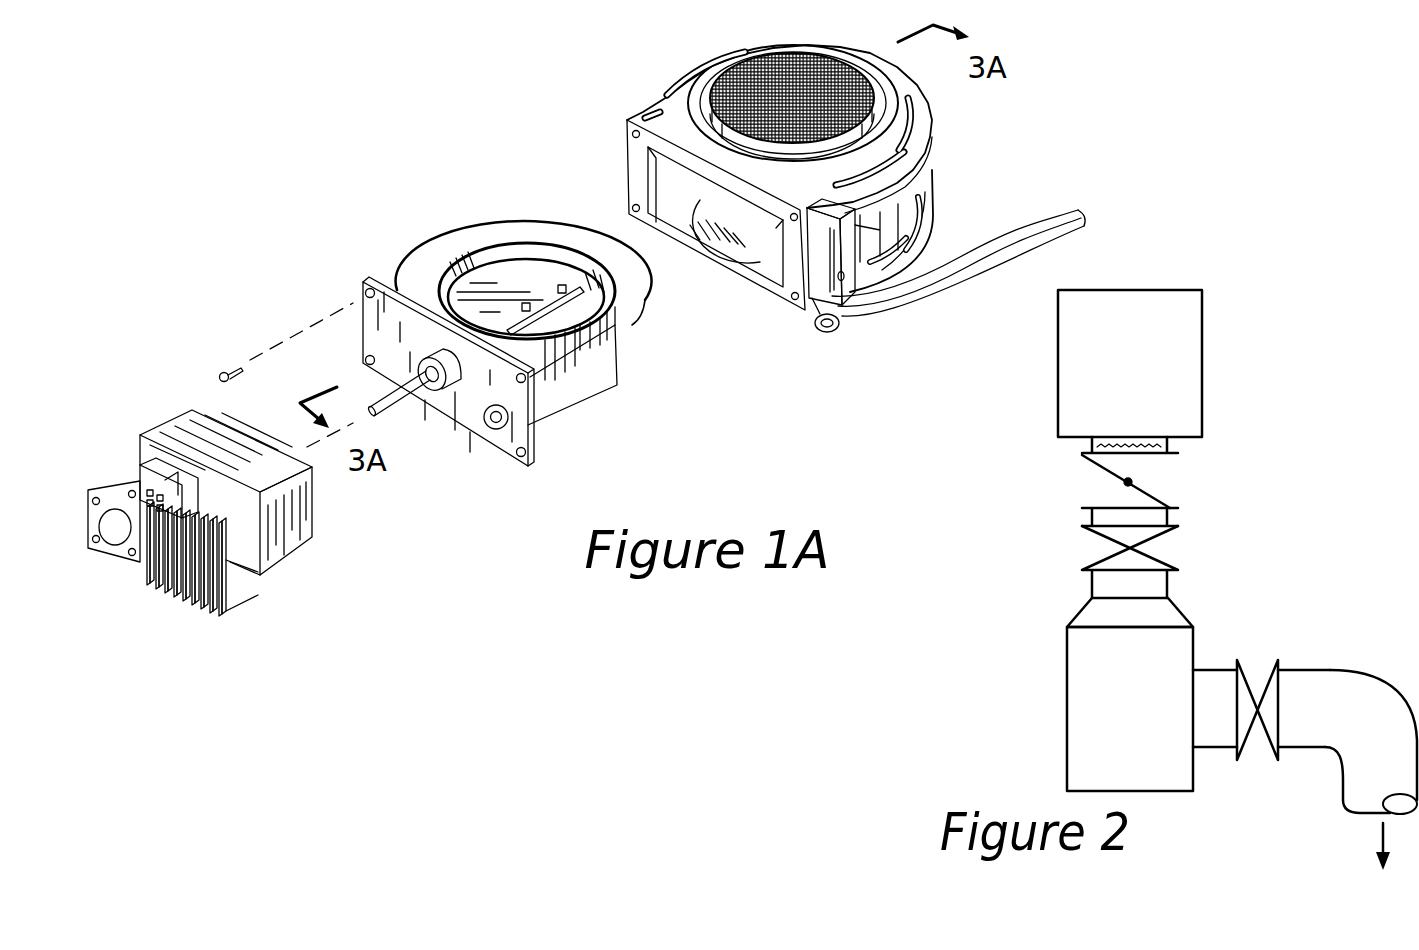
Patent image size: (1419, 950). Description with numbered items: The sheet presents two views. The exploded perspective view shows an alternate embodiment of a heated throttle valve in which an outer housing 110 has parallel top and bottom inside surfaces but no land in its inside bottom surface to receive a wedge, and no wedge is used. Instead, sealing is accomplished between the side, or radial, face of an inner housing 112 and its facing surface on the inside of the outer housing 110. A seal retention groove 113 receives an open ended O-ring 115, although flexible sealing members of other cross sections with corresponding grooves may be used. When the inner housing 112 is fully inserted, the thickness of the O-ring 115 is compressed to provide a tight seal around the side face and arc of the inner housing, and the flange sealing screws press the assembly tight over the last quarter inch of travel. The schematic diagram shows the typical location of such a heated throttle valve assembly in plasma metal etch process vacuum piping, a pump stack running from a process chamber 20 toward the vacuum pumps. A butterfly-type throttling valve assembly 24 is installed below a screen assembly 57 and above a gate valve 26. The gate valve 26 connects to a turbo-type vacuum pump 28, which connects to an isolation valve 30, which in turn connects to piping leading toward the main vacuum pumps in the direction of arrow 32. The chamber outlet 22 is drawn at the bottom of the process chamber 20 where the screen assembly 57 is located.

In FIG. 1A, the outer housing 110 is at (740, 282).
In FIG. 1A, the inner housing 112 is at (578, 388).
In FIG. 1A, the seal retention groove 113 is at (575, 388).
In FIG. 1A, the open ended O-ring 115 is at (653, 300).
In FIG. 2, the process chamber 20 is at (1202, 368).
In FIG. 2, the filter outlet 22 is at (1177, 446).
In FIG. 2, the screen assembly 57 is at (1090, 439).
In FIG. 2, the butterfly-type throttling valve assembly 24 is at (1185, 476).
In FIG. 2, the gate valve 26 is at (1152, 562).
In FIG. 2, the turbo-type vacuum pump 28 is at (1067, 670).
In FIG. 2, the isolation valve 30 is at (1266, 680).
In FIG. 2, the arrow 32 is at (1371, 787).